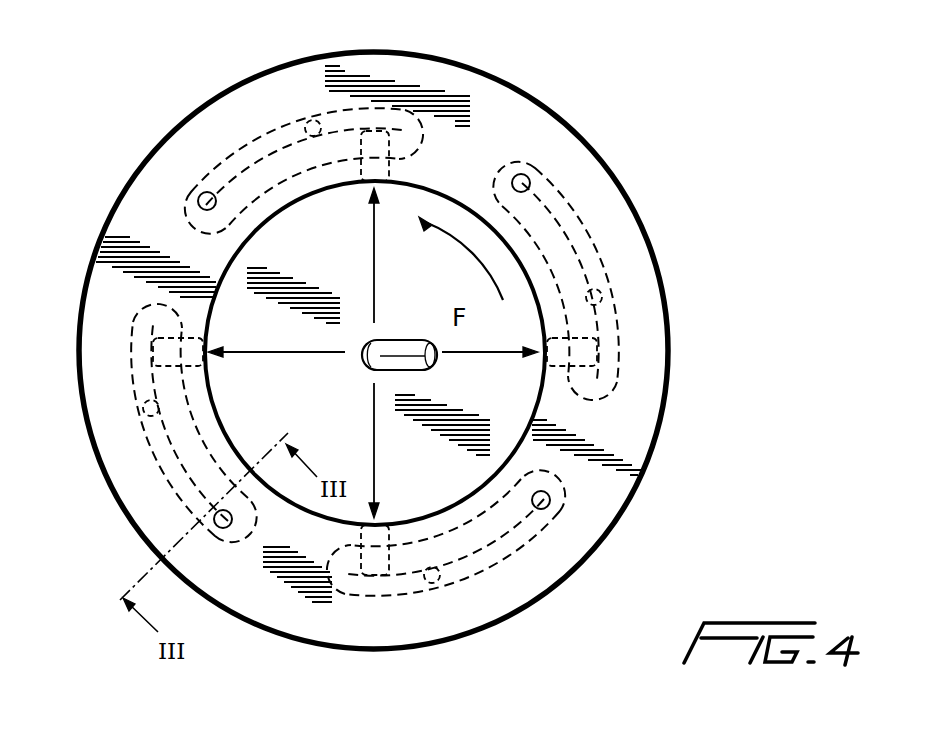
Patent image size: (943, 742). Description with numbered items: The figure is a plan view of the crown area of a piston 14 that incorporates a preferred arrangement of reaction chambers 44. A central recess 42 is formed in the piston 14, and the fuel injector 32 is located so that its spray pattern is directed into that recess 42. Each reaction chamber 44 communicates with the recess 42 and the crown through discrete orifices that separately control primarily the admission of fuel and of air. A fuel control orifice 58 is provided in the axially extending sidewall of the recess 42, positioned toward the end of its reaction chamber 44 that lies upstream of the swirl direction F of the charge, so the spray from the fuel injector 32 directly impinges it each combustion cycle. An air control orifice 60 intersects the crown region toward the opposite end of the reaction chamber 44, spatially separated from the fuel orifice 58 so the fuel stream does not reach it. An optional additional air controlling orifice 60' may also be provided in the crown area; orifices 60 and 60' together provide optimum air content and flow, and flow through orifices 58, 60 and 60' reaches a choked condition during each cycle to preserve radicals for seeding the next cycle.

The piston 14 is at (100, 243).
The fuel injector 32 is at (407, 341).
The recess 42 is at (348, 416).
The reaction chamber 44 is at (407, 113).
The discrete orifice 58 is at (358, 181).
The discrete orifice 60 is at (401, 375).
The additional discrete air controlling orifice 60' is at (399, 341).